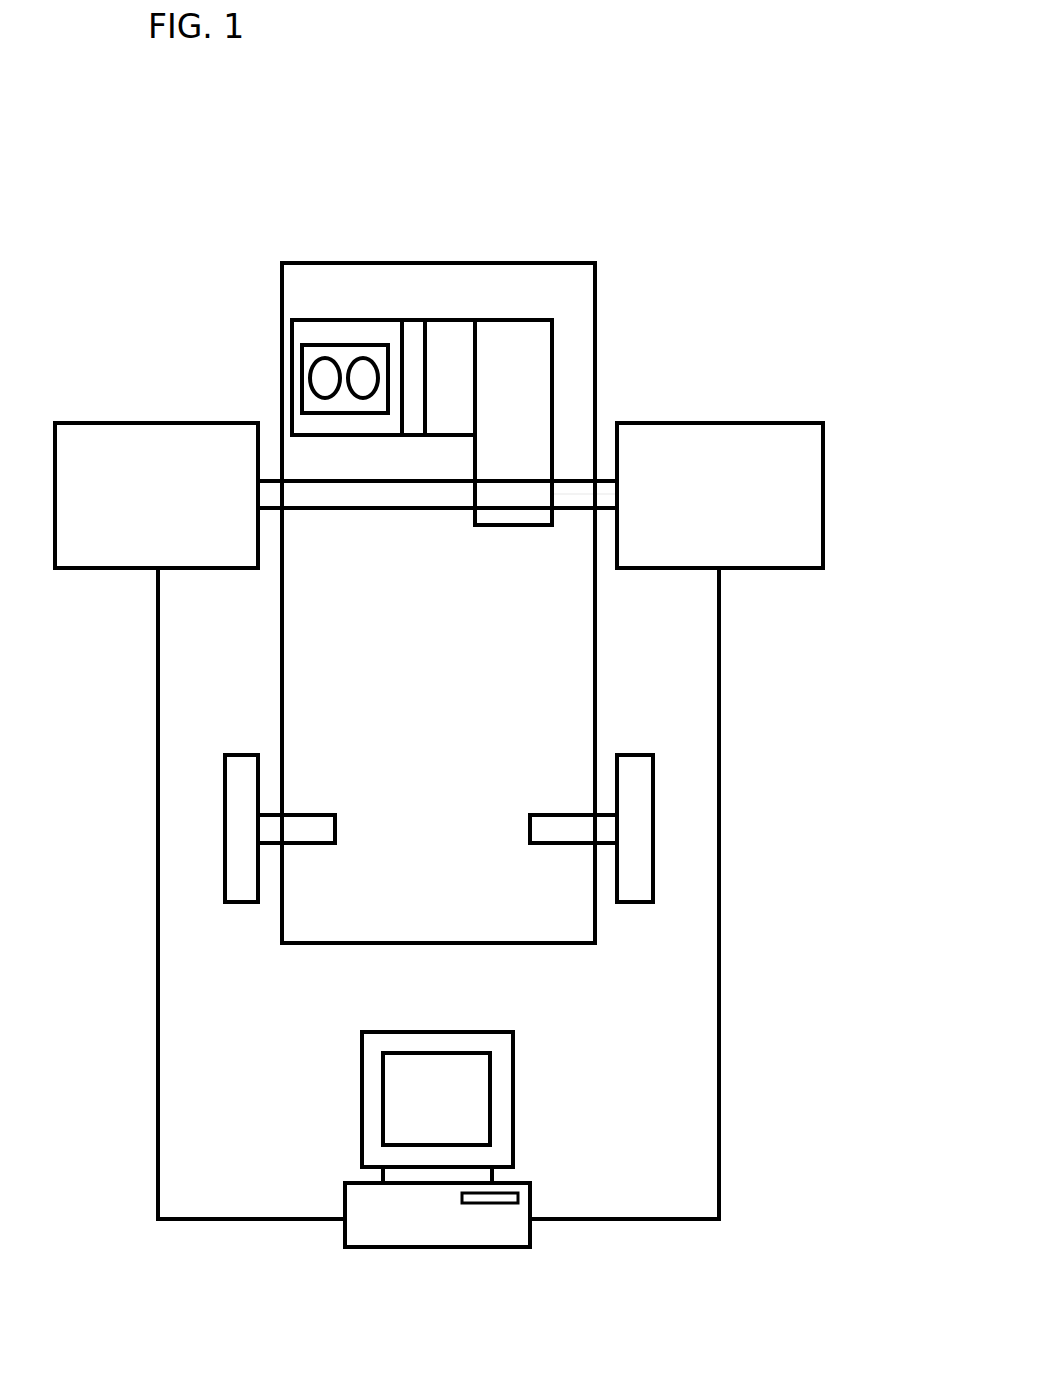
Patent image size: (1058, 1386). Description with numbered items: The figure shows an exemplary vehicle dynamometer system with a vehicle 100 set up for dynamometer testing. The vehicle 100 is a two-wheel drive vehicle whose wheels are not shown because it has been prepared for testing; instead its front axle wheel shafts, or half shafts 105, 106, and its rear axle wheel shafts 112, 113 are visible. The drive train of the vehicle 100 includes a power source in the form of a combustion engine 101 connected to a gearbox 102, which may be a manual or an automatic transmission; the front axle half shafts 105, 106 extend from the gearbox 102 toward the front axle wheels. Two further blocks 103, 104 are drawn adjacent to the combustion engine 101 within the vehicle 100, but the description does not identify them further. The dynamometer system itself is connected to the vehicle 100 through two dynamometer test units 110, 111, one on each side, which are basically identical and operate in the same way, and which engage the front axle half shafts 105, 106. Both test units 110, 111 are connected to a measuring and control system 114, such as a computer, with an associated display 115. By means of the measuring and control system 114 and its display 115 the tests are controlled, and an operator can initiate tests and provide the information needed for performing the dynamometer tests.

The vehicle 100 is at (575, 288).
The combustion engine 101 is at (348, 333).
The gearbox 102 is at (518, 395).
The image processing unit 103 is at (460, 348).
The memory 104 is at (412, 348).
The front axle wheel shaft 105 is at (302, 493).
The front axle wheel shaft 106 is at (583, 493).
The dynamometer test unit 110 is at (128, 438).
The dynamometer test unit 111 is at (812, 494).
The rear axle wheel shaft 112 is at (302, 828).
The rear axle wheel shaft 113 is at (560, 828).
The measuring and control system 114 is at (455, 1218).
The display 115 is at (475, 1073).